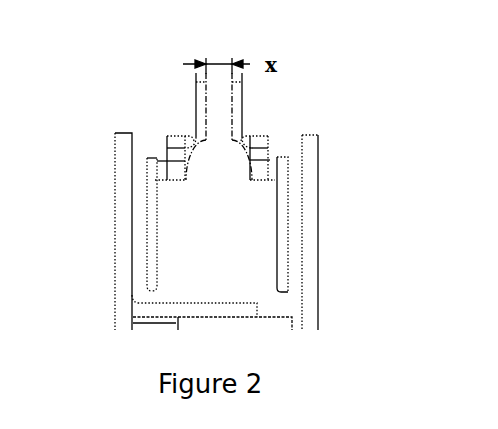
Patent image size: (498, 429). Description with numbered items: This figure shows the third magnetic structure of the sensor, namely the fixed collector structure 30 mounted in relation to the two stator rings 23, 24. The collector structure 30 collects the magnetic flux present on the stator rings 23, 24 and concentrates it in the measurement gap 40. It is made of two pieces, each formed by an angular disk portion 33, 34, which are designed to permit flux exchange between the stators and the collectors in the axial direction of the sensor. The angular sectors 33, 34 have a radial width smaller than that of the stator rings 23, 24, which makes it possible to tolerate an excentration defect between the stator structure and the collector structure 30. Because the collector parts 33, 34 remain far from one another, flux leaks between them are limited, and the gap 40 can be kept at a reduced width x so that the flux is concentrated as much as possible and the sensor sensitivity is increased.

The stator ring 23 is at (125, 210).
The stator ring 24 is at (308, 262).
The fixed collector structure 30 is at (153, 128).
The angular disk portion 33 is at (150, 203).
The angular disk portion 34 is at (283, 217).
The measurement gap 40 is at (218, 112).